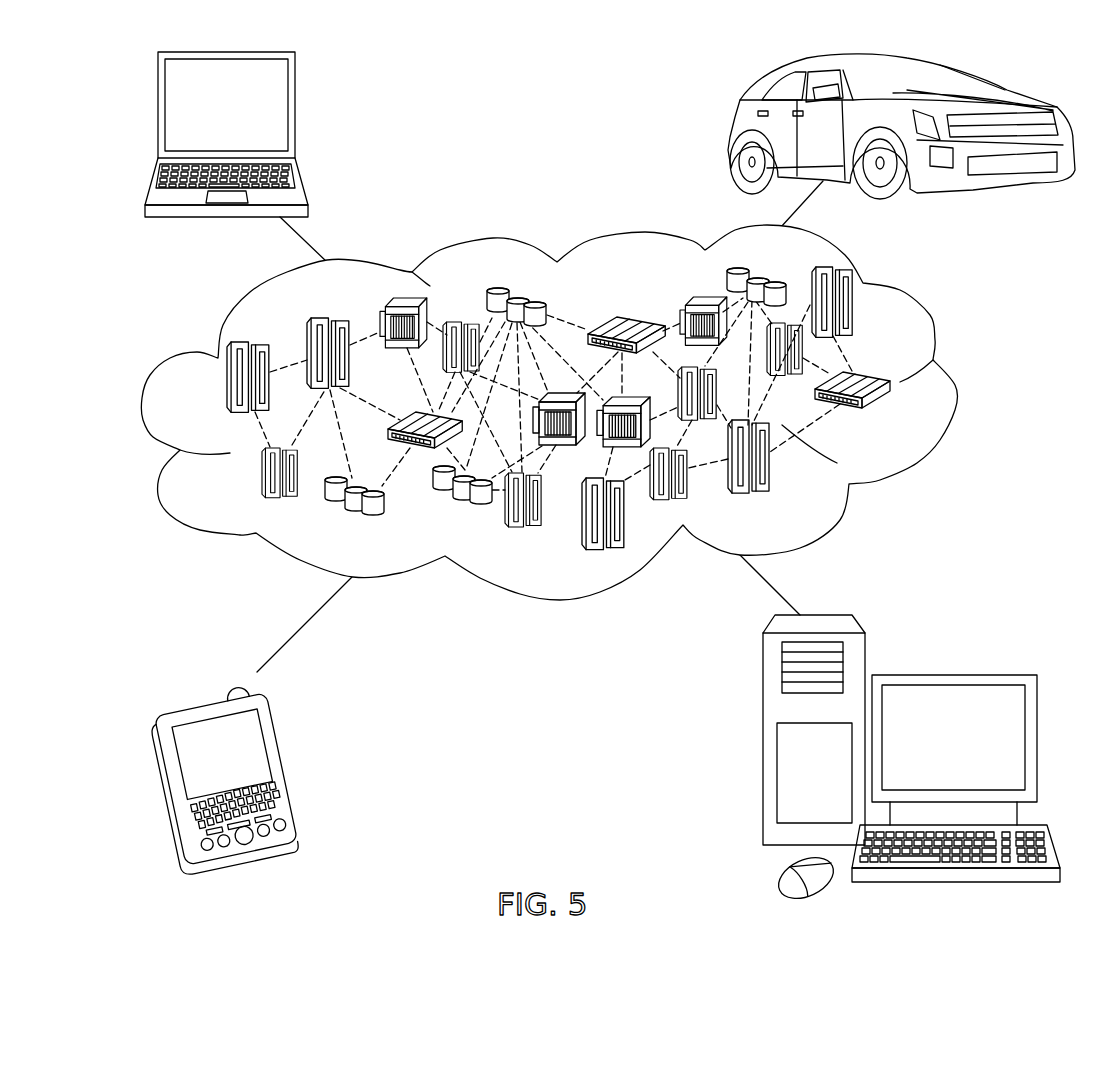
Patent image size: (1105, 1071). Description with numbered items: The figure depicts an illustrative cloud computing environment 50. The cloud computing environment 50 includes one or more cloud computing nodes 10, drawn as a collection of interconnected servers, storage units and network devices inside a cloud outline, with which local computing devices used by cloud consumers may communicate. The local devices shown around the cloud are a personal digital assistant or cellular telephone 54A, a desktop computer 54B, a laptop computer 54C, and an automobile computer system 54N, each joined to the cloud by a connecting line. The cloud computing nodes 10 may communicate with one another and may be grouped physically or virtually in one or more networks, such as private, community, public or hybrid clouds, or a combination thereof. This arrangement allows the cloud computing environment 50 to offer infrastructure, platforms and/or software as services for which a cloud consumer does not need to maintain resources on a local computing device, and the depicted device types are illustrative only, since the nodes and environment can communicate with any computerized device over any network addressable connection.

The cloud computing environment 50 is at (953, 386).
The cloud computing node 10 is at (895, 417).
The personal digital assistant or cellular telephone 54A is at (285, 768).
The desktop computer 54B is at (950, 675).
The laptop computer 54C is at (295, 122).
The automobile computer system 54N is at (732, 130).